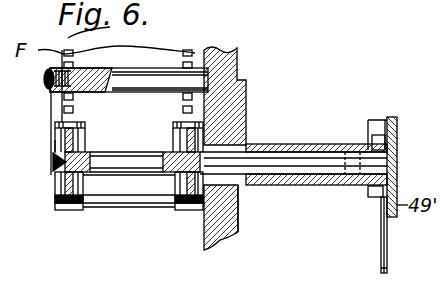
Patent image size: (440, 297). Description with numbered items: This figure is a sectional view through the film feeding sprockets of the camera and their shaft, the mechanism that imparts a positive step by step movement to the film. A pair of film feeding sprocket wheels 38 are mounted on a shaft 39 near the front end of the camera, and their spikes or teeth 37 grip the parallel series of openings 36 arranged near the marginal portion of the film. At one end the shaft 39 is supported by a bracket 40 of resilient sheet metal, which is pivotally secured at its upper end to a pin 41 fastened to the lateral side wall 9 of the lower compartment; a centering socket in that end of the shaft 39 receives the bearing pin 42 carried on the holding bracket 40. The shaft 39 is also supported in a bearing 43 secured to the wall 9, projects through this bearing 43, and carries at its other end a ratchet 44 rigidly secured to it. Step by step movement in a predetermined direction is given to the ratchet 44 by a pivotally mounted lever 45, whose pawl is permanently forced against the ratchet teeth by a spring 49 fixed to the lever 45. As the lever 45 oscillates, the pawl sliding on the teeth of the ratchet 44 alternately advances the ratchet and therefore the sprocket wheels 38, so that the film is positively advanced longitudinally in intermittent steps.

The side wall 9 is at (205, 252).
The openings 36 is at (63, 98).
The teeth 37 is at (68, 205).
The film feeding sprocket wheels 38 is at (65, 190).
The shaft 39 is at (253, 158).
The bracket 40 is at (48, 137).
The pin 41 is at (148, 75).
The bearing pin 42 is at (55, 162).
The bearing 43 is at (240, 205).
The ratchet 44 is at (368, 190).
The lever 45 is at (397, 155).
The spring 49 is at (382, 240).